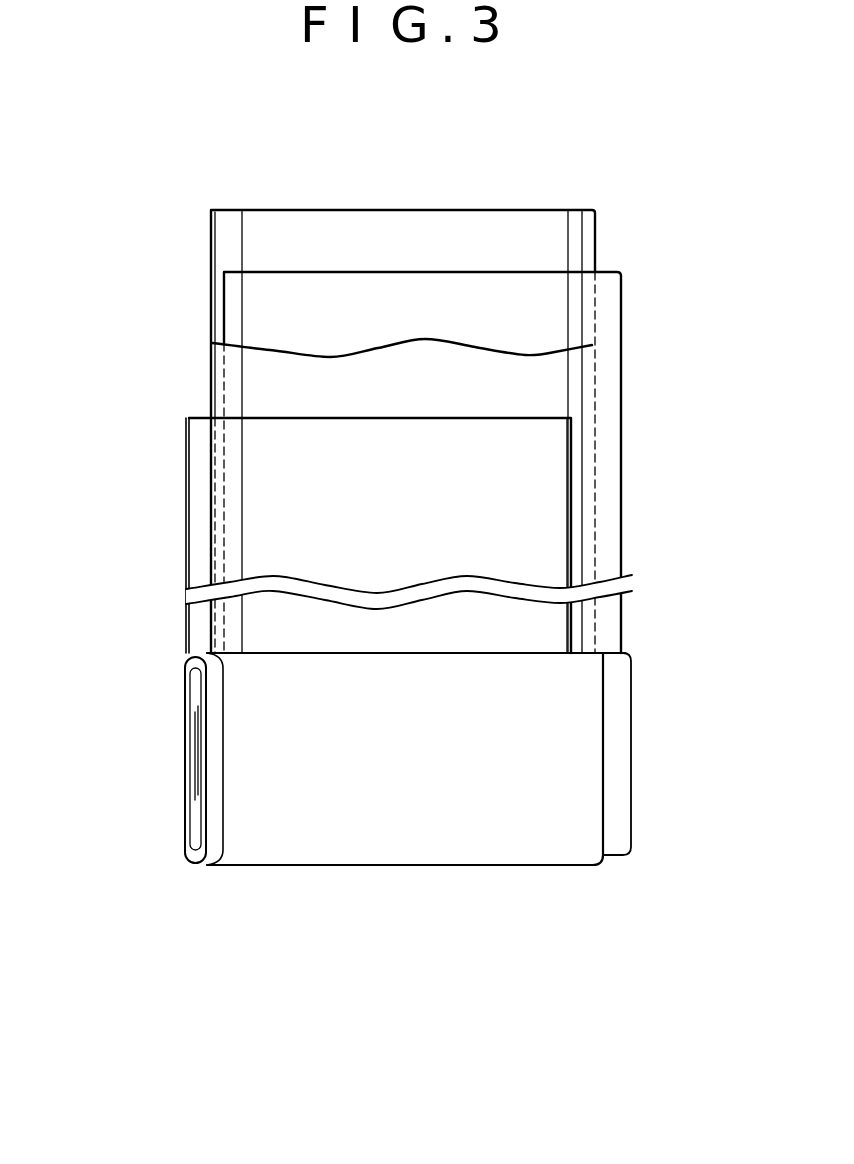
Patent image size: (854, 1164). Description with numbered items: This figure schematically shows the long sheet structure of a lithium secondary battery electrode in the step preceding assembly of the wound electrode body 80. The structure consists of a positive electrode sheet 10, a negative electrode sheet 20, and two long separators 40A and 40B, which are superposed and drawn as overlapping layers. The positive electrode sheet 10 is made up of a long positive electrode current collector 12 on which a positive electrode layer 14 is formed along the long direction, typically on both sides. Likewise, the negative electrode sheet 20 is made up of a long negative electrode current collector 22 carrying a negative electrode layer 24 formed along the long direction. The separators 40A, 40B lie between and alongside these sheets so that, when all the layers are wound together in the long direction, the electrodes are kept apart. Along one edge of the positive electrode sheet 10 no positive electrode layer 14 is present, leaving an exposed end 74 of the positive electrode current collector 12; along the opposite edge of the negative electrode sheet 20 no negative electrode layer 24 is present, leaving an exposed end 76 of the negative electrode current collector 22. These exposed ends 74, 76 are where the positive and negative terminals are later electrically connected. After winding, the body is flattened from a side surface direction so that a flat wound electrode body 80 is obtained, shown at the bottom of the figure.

The positive electrode sheet 10 is at (320, 535).
The positive electrode current collector 12 is at (186, 573).
The positive electrode layer 14 is at (257, 443).
The negative electrode sheet 20 is at (471, 462).
The negative electrode current collector 22 is at (627, 468).
The negative electrode layer 24 is at (578, 297).
The separator 40A is at (237, 234).
The separator 40B is at (237, 382).
The exposed end of positive electrode current collector 74 is at (215, 731).
The exposed end of negative electrode current collector 76 is at (617, 728).
The wound electrode body 80 is at (405, 800).